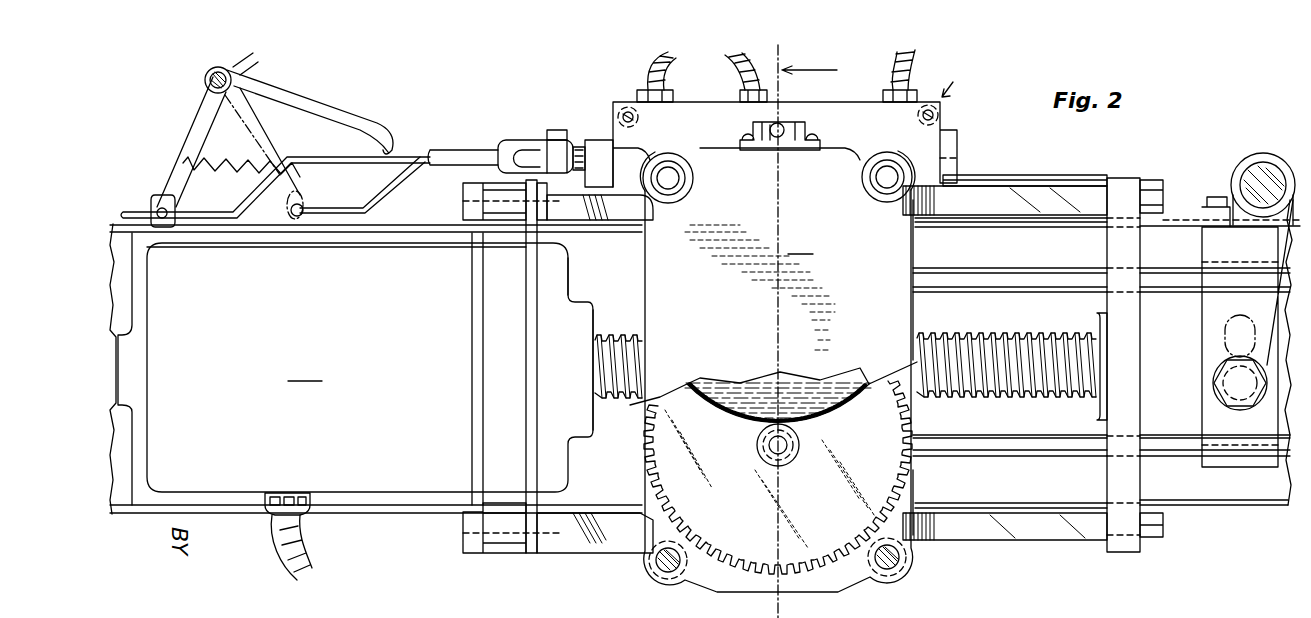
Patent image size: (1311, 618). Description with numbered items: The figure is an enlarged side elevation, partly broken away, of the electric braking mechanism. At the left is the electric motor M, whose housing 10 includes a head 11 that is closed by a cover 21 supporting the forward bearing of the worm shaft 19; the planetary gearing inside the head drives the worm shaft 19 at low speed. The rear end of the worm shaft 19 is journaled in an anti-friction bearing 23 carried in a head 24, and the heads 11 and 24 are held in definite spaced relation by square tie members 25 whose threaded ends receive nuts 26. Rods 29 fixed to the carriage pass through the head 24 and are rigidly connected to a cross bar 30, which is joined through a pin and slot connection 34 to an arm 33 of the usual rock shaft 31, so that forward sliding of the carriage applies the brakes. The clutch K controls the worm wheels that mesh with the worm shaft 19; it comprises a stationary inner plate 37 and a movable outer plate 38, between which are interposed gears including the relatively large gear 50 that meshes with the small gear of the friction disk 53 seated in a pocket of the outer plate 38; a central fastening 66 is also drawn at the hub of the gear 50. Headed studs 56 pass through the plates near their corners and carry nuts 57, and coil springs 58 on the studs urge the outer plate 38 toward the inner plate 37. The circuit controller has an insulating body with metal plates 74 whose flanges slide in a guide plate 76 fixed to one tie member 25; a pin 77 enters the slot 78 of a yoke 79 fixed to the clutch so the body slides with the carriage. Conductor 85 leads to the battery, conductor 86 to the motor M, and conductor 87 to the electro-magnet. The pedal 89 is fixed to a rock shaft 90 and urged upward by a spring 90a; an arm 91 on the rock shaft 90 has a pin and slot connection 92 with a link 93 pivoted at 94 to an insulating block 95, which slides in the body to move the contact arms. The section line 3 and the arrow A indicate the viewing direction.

The housing 10 is at (353, 478).
The head 11 is at (495, 295).
The electric motor M is at (383, 411).
The clutch K is at (802, 371).
The section indicator A is at (953, 78).
The section line 3 is at (818, 69).
The worm shaft 19 is at (617, 337).
The cover 21 is at (558, 285).
The anti-friction bearing 23 is at (1100, 320).
The head 24 is at (1117, 248).
The tie members 25 is at (1057, 198).
The nuts 26 is at (473, 203).
The rods 29 is at (985, 280).
The cross bar 30 is at (1210, 348).
The rock shaft 31 is at (1250, 170).
The arm 33 is at (1240, 240).
The pin and slot connection 34 is at (1233, 383).
The inner plate 37 is at (905, 493).
The outer plate 38 is at (907, 267).
The gear 50 is at (680, 478).
The friction disk 53 is at (833, 387).
The headed studs 56 is at (670, 177).
The nuts 57 is at (657, 167).
The coil springs 58 is at (690, 157).
The hub bolt 66 is at (760, 447).
The metal plates 74 is at (927, 137).
The guide plate 76 is at (1013, 183).
The pin 77 is at (780, 137).
The slot 78 is at (767, 123).
The yoke 79 is at (790, 128).
The conductor 85 is at (745, 70).
The conductor 86 is at (668, 65).
The conductor 87 is at (893, 70).
The pedal 89 is at (337, 112).
The rock shaft 90 is at (233, 80).
The spring 90a is at (270, 173).
The arm 91 is at (190, 140).
The pin and slot connection 92 is at (157, 210).
The link 93 is at (528, 140).
The pivot connection 94 is at (553, 131).
The block 95 is at (612, 140).